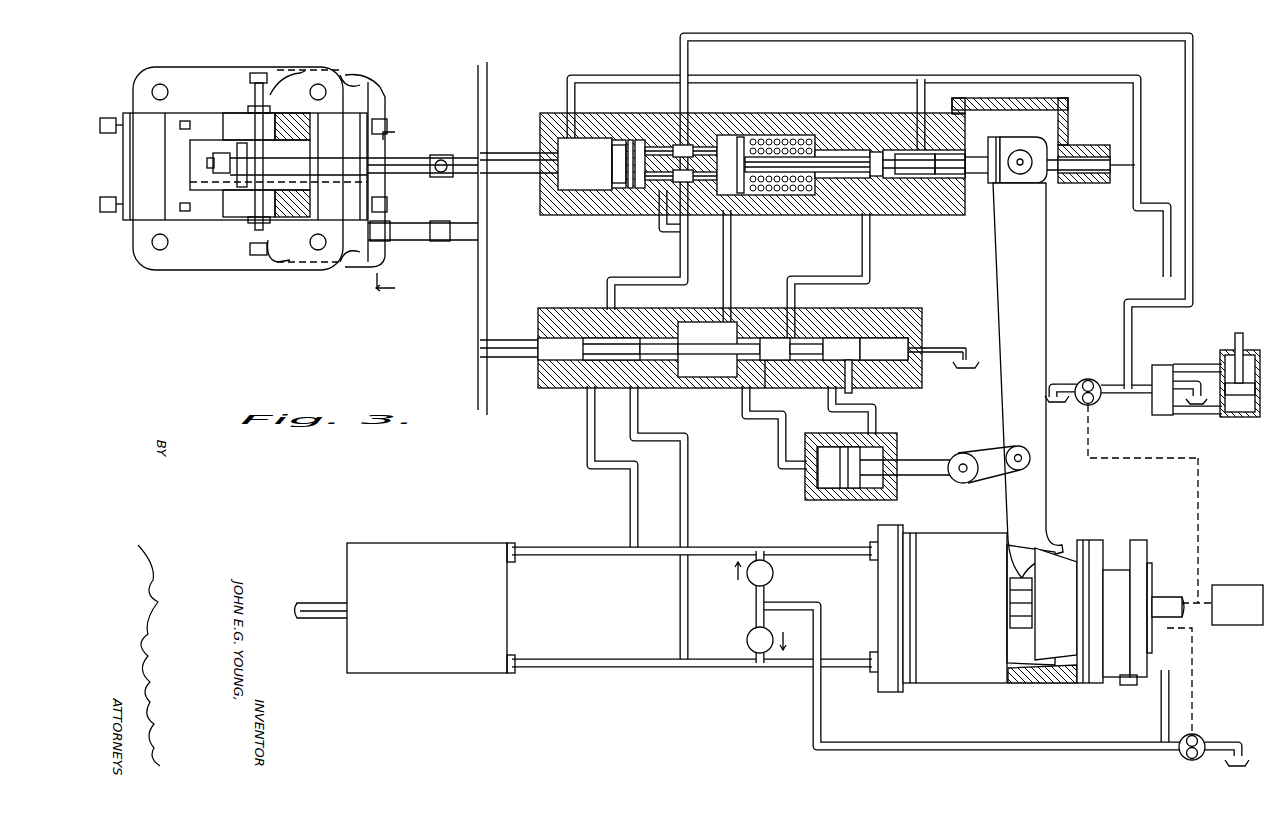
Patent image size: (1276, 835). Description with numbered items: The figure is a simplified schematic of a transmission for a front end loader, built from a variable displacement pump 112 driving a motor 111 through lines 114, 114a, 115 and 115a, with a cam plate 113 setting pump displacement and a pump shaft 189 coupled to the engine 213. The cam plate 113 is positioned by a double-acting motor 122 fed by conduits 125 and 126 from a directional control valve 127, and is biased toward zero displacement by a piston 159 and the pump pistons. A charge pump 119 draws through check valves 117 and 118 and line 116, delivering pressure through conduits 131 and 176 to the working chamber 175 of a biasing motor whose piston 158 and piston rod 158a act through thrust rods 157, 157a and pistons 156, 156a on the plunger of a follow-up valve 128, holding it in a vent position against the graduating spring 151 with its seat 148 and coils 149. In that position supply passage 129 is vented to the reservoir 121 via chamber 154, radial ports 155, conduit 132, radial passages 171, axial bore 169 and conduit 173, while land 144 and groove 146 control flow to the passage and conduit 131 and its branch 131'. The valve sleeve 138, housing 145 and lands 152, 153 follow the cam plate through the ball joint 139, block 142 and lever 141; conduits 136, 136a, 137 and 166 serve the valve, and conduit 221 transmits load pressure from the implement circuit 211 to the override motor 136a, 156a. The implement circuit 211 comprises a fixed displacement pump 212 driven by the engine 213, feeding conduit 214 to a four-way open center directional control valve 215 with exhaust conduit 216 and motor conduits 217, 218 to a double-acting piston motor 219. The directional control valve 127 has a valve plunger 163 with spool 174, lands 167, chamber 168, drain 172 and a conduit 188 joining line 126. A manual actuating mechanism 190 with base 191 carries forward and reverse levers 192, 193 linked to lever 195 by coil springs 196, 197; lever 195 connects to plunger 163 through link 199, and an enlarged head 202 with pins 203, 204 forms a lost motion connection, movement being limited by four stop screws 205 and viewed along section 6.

The section line 6- 6 is at (392, 214).
The motor 111 is at (450, 545).
The pump 112 is at (943, 530).
The cam plate 113 is at (1010, 603).
The fluid line 114 is at (605, 556).
The branch line 114a is at (591, 468).
The fluid line 115 is at (605, 668).
The branch line 115a is at (665, 436).
The replenishing line 116 is at (756, 607).
The check valve 117 is at (774, 574).
The check valve 118 is at (746, 641).
The charge pump 119 is at (1203, 741).
The reservoir 121 is at (966, 366).
The double-acting motor 122 is at (909, 453).
The conduit 125 is at (778, 439).
The conduit 126 is at (876, 419).
The directional control valve 127 is at (915, 305).
The follow-up valve 128 is at (855, 110).
The supply passage 129 is at (870, 253).
The conduit 131 is at (1130, 494).
The pressure line branch 131' is at (1113, 149).
The conduit 132 is at (732, 263).
The conduit 136 is at (668, 205).
The override motor 136a is at (700, 170).
The conduit 137 is at (636, 280).
The valve sleeve 138 is at (978, 150).
The ball joint 139 is at (1022, 150).
The lever 141 is at (1038, 229).
The joint block 142 is at (1040, 150).
The land 144 is at (918, 115).
The housing 145 is at (943, 118).
The groove 146 is at (940, 195).
The spring seat 148 is at (742, 140).
The spring 149 is at (790, 196).
The graduating spring 151 is at (805, 140).
The piston 152 is at (935, 180).
The piston land 153 is at (900, 180).
The chamber 154 is at (905, 182).
The radial ports 155 is at (873, 180).
The piston 156 is at (740, 196).
The piston 156a is at (742, 140).
The thrust rod 157 is at (640, 190).
The thrust rod 157a is at (662, 146).
The piston 158 is at (616, 190).
The piston rod 158a is at (505, 152).
The piston 159 is at (1085, 183).
The valve plunger 163 is at (462, 242).
The conduit 166 is at (788, 330).
The valve land 167 is at (822, 338).
The chamber 168 is at (878, 338).
The axial bore 169 is at (796, 362).
The radial passages 171 is at (730, 352).
The radial passages 172 is at (858, 368).
The conduit 173 is at (940, 347).
The valve spool 174 is at (595, 338).
The working chamber 175 is at (580, 140).
The conduit 176 is at (576, 80).
The conduit 188 is at (832, 395).
The pump shaft 189 is at (1162, 596).
The manual actuating mechanism 190 is at (190, 68).
The base 191 is at (240, 68).
The forward lever 192 is at (348, 176).
The reverse lever 193 is at (292, 116).
The lever 195 is at (385, 90).
The coil spring 196 is at (280, 258).
The coil spring 197 is at (283, 90).
The link 199 is at (412, 242).
The enlarged head 202 is at (228, 118).
The pin 203 is at (240, 217).
The pin 204 is at (305, 146).
The stop screws 205 is at (112, 180).
The implement circuit 211 is at (1167, 362).
The fixed displacement pump 212 is at (1090, 379).
The engine 213 is at (1240, 626).
The conduit 214 is at (1118, 394).
The four-way open center directional control valve 215 is at (1156, 415).
The exhaust conduit 216 is at (1184, 376).
The motor conduit 217 is at (1233, 350).
The motor conduit 218 is at (1192, 414).
The double-acting piston motor 219 is at (1246, 417).
The conduit 221 is at (1193, 271).